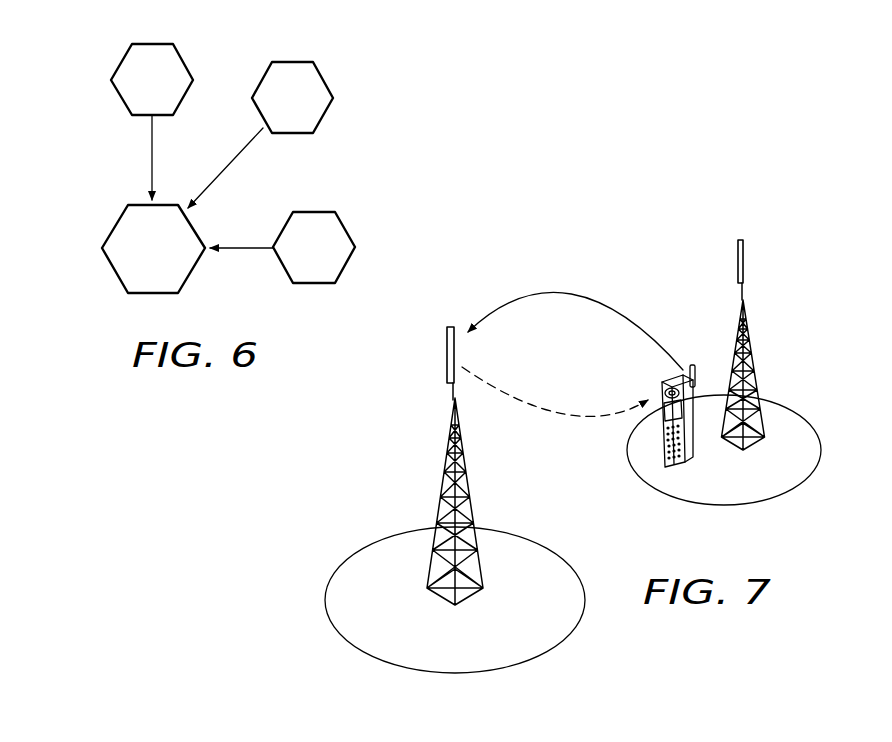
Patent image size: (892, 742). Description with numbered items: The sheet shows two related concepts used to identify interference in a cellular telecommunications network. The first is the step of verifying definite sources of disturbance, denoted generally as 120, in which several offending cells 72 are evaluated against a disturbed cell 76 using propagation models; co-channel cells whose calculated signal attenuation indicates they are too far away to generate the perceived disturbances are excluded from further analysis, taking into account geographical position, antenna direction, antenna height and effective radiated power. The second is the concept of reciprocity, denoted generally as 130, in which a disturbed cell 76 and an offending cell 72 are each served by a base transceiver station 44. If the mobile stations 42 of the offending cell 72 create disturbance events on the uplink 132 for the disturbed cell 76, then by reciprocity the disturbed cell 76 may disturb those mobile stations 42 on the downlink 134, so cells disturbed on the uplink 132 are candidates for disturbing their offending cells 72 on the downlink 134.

In FIG. 6, the verification of definite sources of disturbance 120 is at (84, 63).
In FIG. 6, the offending cell 72 is at (165, 92).
In FIG. 7, the offending cell 72 is at (800, 423).
In FIG. 6, the disturbed cell 76 is at (167, 259).
In FIG. 7, the disturbed cell 76 is at (353, 560).
In FIG. 7, the concept of reciprocity 130 is at (706, 222).
In FIG. 7, the uplink 132 is at (582, 297).
In FIG. 7, the downlink 134 is at (547, 415).
In FIG. 7, the base transceiver station 44 is at (448, 437).
In FIG. 7, the mobile station 42 is at (695, 452).